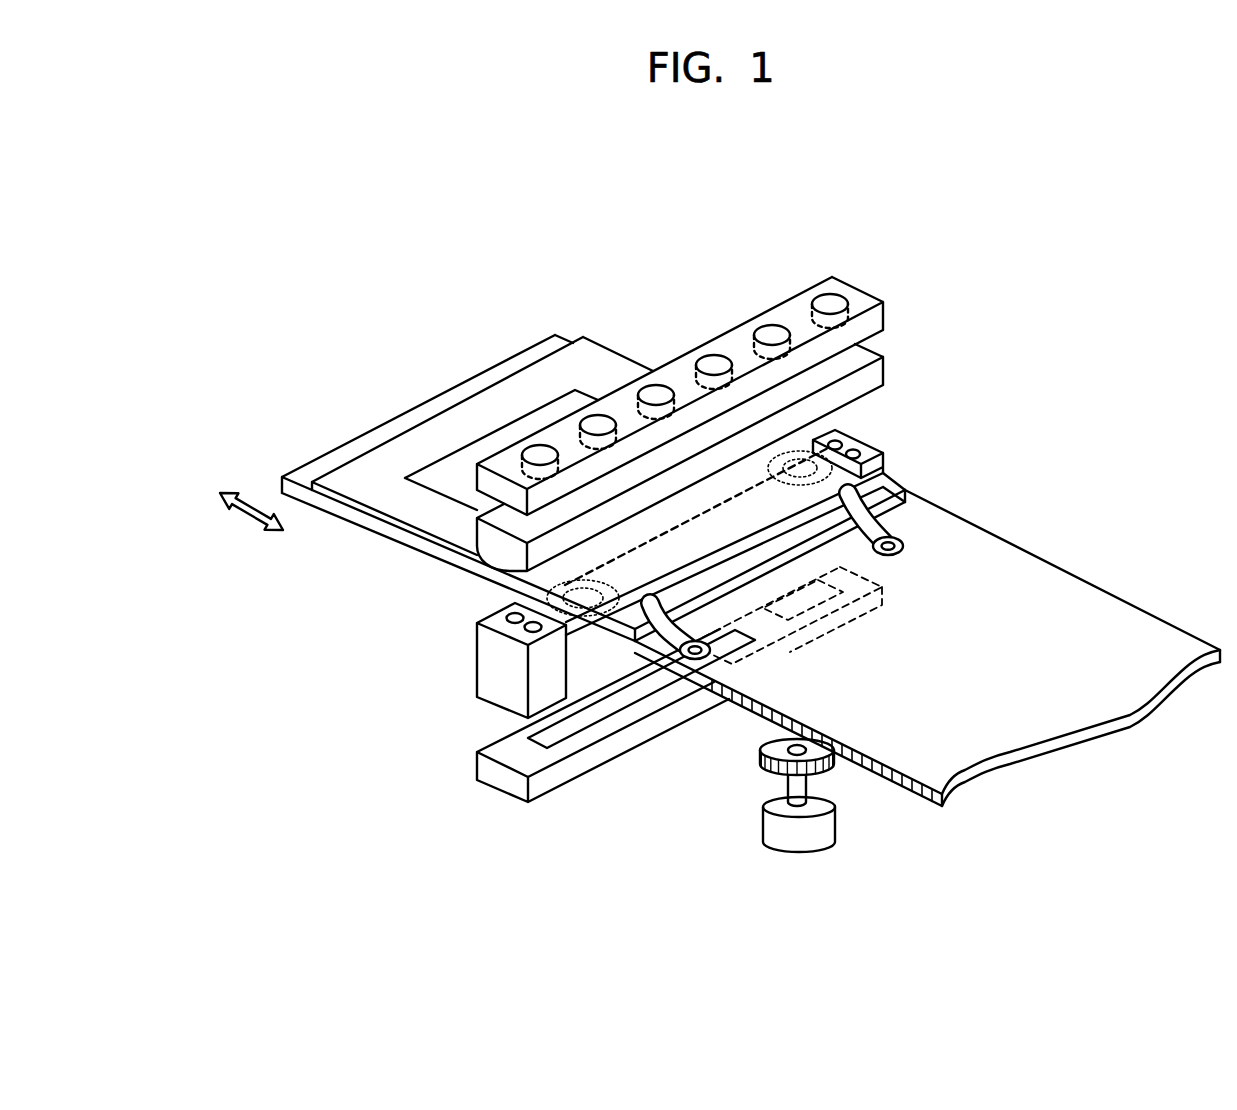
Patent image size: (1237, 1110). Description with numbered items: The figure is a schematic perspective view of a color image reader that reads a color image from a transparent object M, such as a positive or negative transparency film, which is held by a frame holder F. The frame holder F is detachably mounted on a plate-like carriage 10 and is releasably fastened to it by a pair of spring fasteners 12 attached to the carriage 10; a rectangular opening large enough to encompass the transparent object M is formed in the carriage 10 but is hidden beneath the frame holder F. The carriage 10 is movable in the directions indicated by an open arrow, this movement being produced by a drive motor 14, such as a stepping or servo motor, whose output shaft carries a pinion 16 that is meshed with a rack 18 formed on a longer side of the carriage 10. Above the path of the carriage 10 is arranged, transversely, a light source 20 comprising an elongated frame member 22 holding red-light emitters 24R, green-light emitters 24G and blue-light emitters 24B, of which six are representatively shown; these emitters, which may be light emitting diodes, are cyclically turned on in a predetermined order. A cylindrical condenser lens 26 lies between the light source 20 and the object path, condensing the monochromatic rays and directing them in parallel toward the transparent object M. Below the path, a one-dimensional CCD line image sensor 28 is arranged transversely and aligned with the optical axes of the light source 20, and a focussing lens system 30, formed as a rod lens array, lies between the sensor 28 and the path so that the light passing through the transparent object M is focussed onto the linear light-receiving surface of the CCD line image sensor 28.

The plate-like carriage 10 is at (1035, 592).
The spring fasteners 12 is at (890, 518).
The drive motor 14 is at (797, 845).
The pinion 16 is at (766, 748).
The rack 18 is at (917, 793).
The light source 20 is at (571, 398).
The elongated frame member 22 is at (862, 291).
The blue-light emitters 24B is at (540, 452).
The green-light emitters 24G is at (598, 422).
The red-light emitters 24R is at (657, 393).
The cylindrical condenser lens 26 is at (860, 358).
The CCD line image sensor 28 is at (492, 782).
The focussing lens system 30 is at (875, 450).
The frame holder F is at (381, 459).
The transparent object M is at (483, 448).